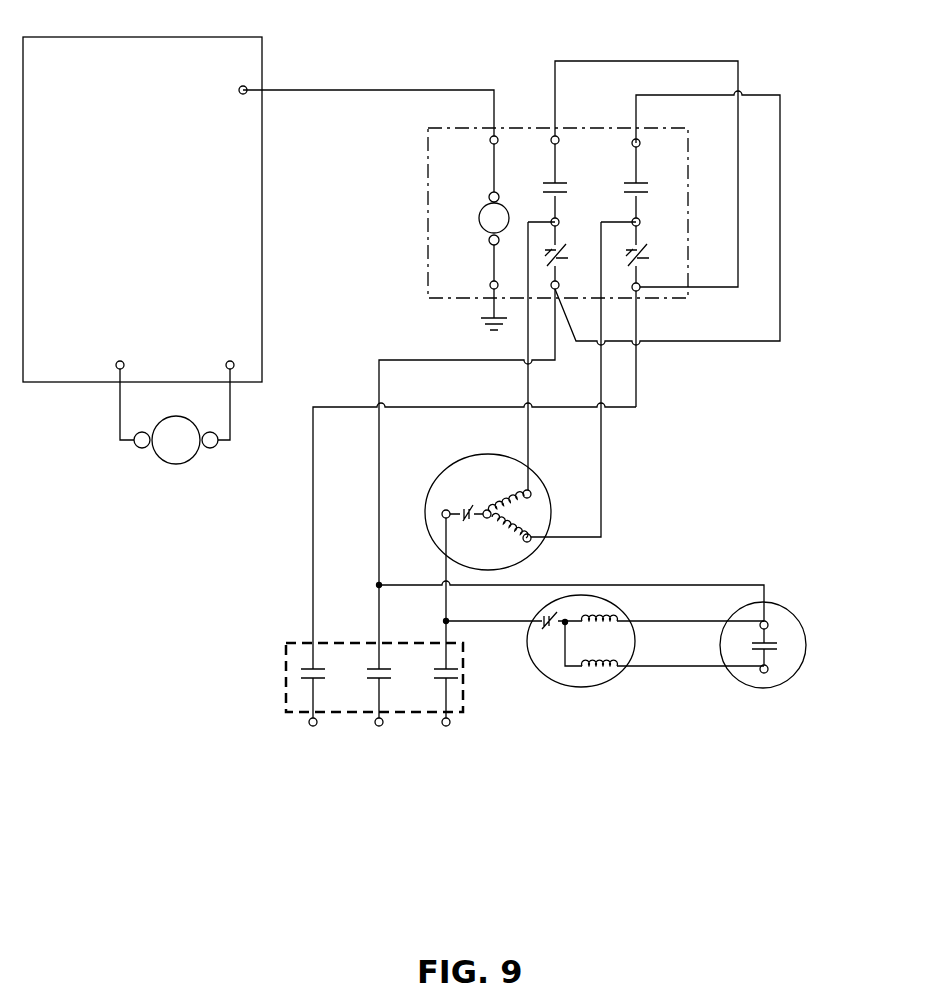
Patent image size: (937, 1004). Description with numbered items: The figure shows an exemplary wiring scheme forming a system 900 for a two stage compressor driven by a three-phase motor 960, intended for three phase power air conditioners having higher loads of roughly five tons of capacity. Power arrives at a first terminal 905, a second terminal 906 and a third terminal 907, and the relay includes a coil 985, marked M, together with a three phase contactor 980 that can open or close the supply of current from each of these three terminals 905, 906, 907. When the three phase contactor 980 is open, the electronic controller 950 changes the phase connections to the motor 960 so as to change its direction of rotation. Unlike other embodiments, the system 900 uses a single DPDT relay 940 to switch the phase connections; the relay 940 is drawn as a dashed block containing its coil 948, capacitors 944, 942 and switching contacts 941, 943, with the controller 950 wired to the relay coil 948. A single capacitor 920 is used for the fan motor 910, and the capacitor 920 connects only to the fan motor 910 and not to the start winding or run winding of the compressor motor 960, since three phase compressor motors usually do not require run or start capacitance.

The system 900 is at (793, 898).
The first terminal (L1) 905 is at (451, 726).
The second terminal (L2) 906 is at (384, 726).
The third terminal (L3) 907 is at (318, 726).
The fan motor 910 is at (620, 603).
The capacitor 920 is at (795, 614).
The DPDT relay 940 is at (702, 117).
The relay switch contact 941 is at (557, 243).
The relay capacitor 942 is at (637, 181).
The relay switch contact 943 is at (637, 243).
The relay capacitor 944 is at (557, 181).
The relay coil 948 is at (505, 207).
The electronic controller 950 is at (262, 42).
The motor 960 is at (541, 488).
The three phase contactor 980 is at (286, 686).
The coil (M) 985 is at (185, 462).